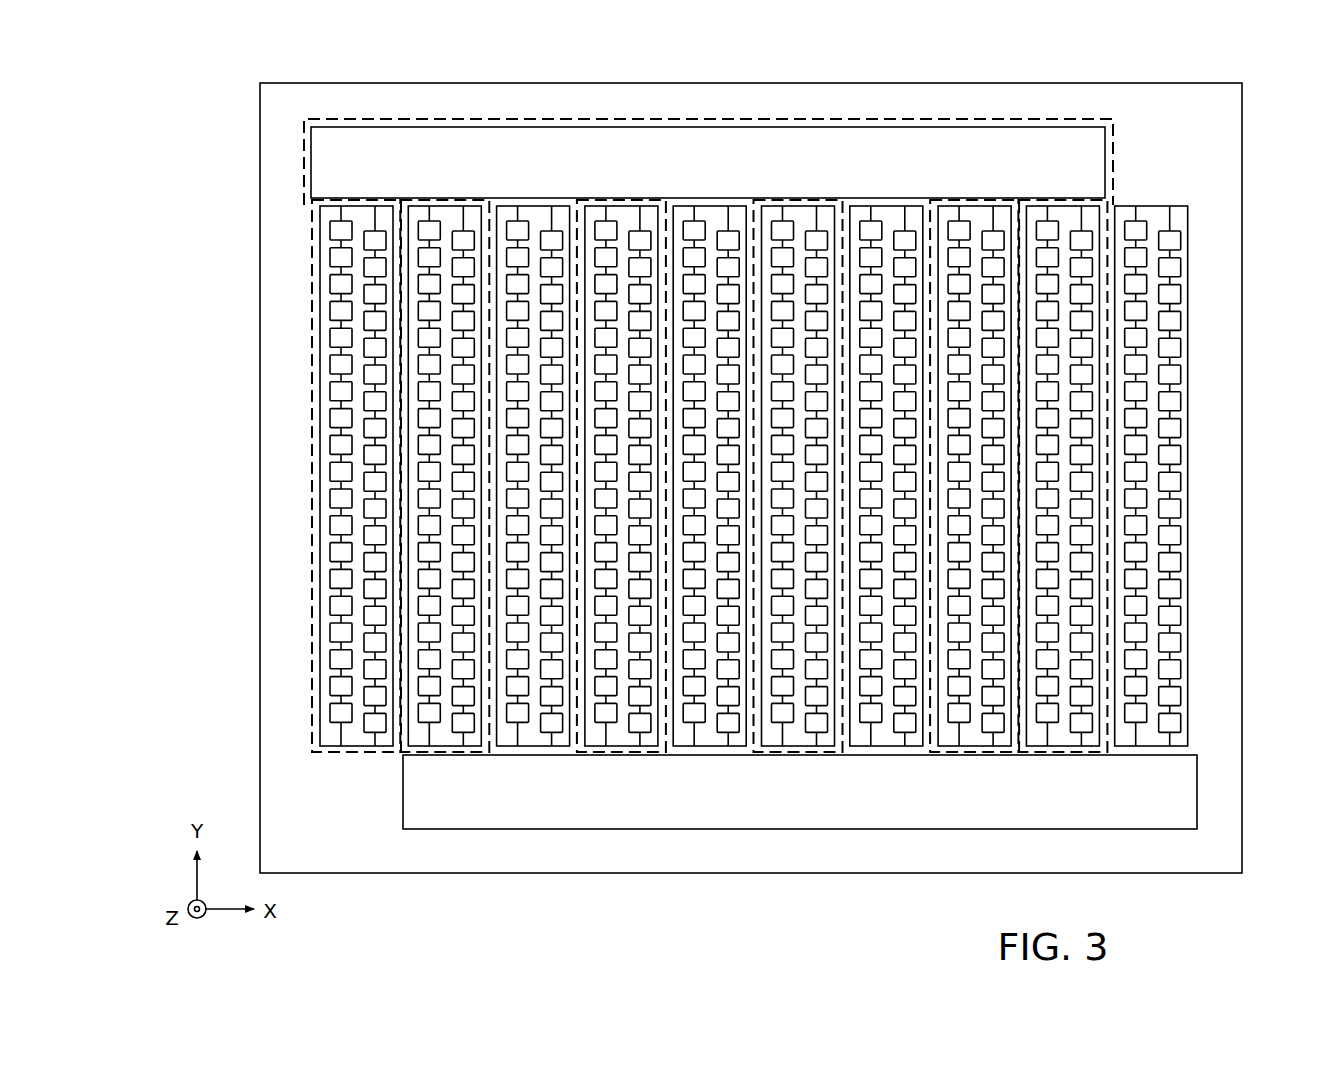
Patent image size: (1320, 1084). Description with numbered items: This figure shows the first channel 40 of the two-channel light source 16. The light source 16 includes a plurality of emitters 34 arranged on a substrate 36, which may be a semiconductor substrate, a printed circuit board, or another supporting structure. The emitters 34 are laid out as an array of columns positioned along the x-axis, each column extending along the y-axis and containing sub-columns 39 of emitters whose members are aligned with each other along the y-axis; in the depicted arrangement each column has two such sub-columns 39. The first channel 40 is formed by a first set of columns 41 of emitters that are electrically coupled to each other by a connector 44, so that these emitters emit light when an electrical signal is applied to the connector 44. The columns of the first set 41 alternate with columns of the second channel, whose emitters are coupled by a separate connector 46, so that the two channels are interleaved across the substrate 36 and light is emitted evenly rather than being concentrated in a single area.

The light source 16 is at (197, 99).
The emitters 34 is at (750, 477).
The substrate 36 is at (1160, 152).
The sub-column of emitters 39 is at (807, 744).
The first channel 40 is at (950, 118).
The first set of columns 41 is at (703, 768).
The connector 44 is at (722, 162).
The connector 46 is at (1178, 793).